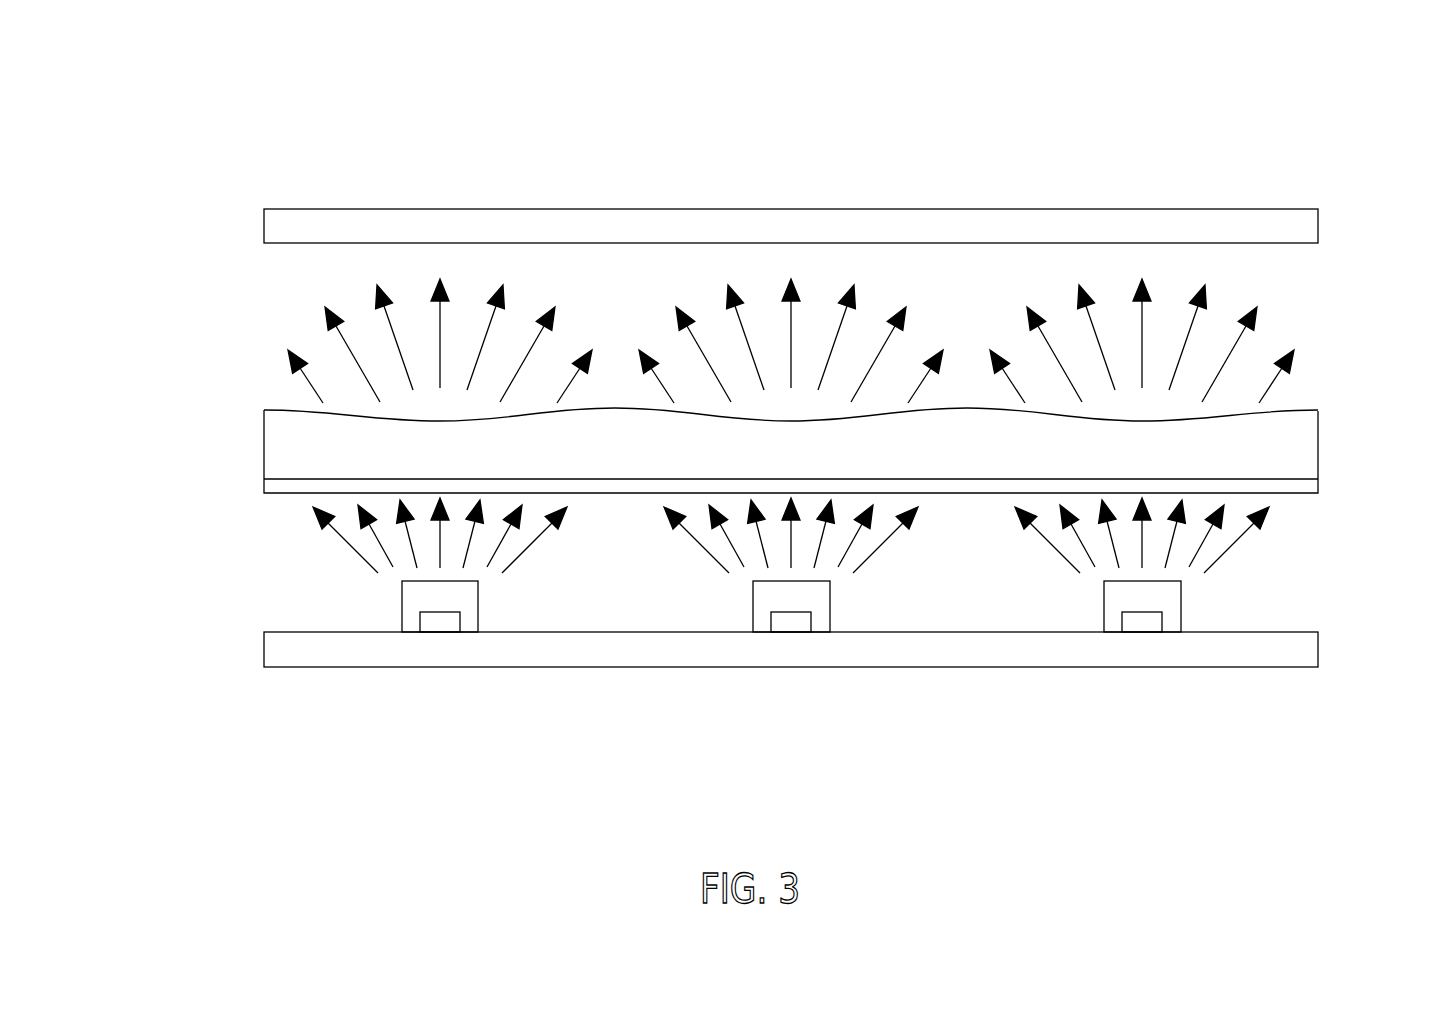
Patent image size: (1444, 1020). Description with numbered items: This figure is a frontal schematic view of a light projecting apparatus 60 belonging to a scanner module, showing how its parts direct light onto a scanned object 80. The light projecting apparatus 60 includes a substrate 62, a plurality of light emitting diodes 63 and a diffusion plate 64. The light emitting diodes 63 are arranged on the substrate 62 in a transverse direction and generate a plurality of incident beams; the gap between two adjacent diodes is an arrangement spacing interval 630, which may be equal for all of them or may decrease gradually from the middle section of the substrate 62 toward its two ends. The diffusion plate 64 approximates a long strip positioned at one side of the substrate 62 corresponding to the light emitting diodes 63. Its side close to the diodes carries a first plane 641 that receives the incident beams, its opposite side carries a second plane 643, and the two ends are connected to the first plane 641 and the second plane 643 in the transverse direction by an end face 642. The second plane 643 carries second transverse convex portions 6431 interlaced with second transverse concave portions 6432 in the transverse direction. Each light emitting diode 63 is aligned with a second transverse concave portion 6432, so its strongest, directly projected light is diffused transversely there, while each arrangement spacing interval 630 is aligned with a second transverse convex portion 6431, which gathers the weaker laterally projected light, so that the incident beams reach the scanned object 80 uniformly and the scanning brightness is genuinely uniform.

The scanned object 80 is at (301, 220).
The light projecting apparatus 60 is at (147, 418).
The substrate 62 is at (365, 655).
The light emitting diodes 63 is at (473, 603).
The arrangement spacing interval 630 is at (626, 616).
The diffusion plate 64 is at (791, 292).
The first plane 641 is at (1290, 493).
The end face 642 is at (264, 450).
The second plane 643 is at (893, 88).
The second transverse convex portions 6431 is at (614, 382).
The second transverse concave portions 6432 is at (425, 405).